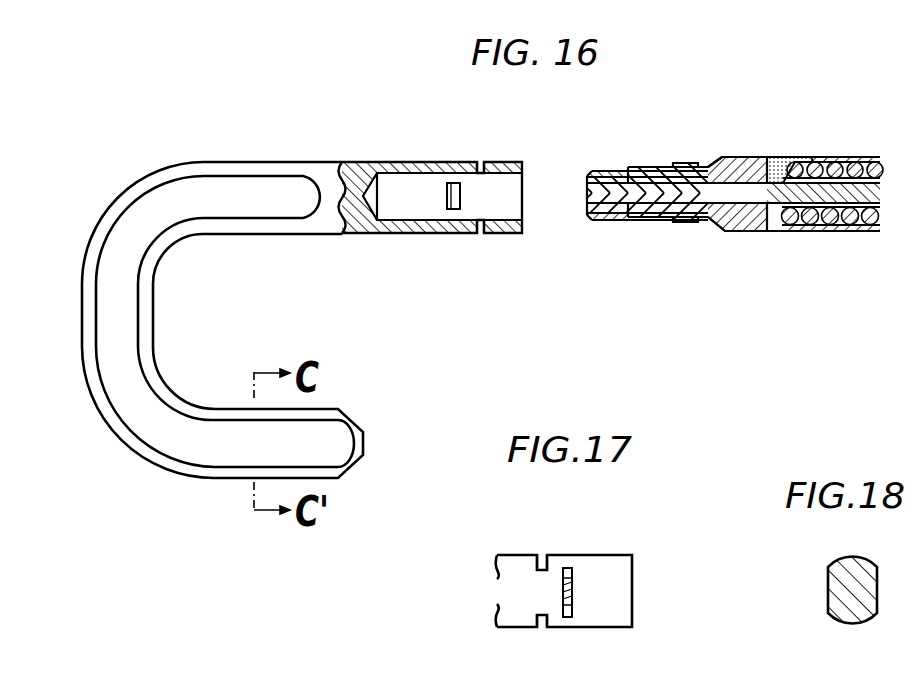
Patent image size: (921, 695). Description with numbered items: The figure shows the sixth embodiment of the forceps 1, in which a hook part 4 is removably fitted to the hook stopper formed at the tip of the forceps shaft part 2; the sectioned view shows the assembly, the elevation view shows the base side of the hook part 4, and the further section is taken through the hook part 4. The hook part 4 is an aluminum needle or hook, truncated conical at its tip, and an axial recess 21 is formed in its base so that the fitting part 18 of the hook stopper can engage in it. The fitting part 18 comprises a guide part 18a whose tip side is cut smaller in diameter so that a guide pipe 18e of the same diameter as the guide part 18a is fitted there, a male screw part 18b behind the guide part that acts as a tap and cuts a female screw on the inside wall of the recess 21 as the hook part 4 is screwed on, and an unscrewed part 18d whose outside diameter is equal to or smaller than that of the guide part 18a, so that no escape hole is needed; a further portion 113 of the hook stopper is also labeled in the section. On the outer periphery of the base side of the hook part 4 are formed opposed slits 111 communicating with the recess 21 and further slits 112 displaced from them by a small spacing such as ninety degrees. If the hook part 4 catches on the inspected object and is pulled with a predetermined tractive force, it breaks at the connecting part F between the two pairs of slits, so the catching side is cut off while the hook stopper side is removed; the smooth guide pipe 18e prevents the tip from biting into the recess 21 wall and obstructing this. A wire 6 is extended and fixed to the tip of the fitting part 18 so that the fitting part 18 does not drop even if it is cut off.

In FIG. 16, the insertion part 1 is at (626, 136).
In FIG. 16, the forceps shaft part 2 is at (745, 157).
In FIG. 16, the hook part 4 is at (362, 168).
In FIG. 17, the hook part 4 is at (508, 570).
In FIG. 18, the hook part 4 is at (832, 583).
In FIG. 16, the wire 6 is at (757, 205).
In FIG. 16, the fitting part 18 is at (718, 235).
In FIG. 16, the guide part 18a is at (652, 221).
In FIG. 16, the male screw part 18b is at (686, 224).
In FIG. 16, the unscrewed part 18d is at (728, 218).
In FIG. 16, the guide pipe 18e is at (602, 222).
In FIG. 16, the recess 21 is at (413, 219).
In FIG. 16, the slits 111 is at (454, 183).
In FIG. 17, the slits 111 is at (543, 555).
In FIG. 16, the slits 112 is at (483, 162).
In FIG. 17, the slits 112 is at (577, 588).
In FIG. 16, the joint member 113 is at (718, 164).
In FIG. 17, the connecting part F is at (557, 567).